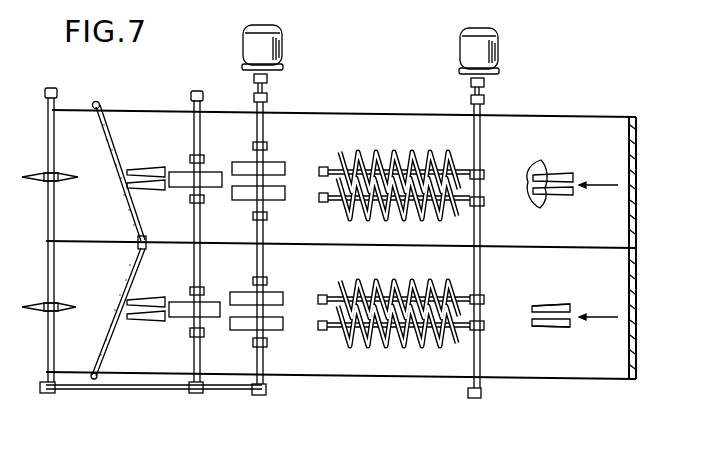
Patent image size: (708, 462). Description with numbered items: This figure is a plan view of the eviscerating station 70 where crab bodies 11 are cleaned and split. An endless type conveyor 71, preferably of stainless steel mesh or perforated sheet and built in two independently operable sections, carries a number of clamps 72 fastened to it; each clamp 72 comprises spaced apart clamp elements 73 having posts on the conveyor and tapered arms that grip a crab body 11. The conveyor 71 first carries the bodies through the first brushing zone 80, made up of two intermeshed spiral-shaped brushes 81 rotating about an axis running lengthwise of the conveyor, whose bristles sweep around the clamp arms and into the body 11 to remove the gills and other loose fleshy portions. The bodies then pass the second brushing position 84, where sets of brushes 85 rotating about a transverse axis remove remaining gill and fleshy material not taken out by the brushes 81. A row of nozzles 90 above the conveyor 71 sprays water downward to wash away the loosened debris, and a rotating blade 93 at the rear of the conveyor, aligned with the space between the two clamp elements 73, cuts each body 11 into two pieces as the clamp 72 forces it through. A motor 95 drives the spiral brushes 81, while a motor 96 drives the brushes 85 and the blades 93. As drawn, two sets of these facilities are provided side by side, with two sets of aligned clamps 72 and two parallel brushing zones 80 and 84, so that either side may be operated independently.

The main body 11 is at (530, 170).
The eviscerating station 70 is at (415, 384).
The endless type conveyor 71 is at (555, 380).
The clamp 72 is at (148, 166).
The clamp element 73 is at (558, 304).
The first brushing zone 80 is at (391, 247).
The spiral-shaped brush 81 is at (433, 165).
The second brushing position 84 is at (287, 164).
The brush 85 is at (176, 171).
The nozzle 90 is at (108, 151).
The rotating blade 93 is at (40, 174).
The motor 95 is at (468, 51).
The motor 96 is at (252, 47).